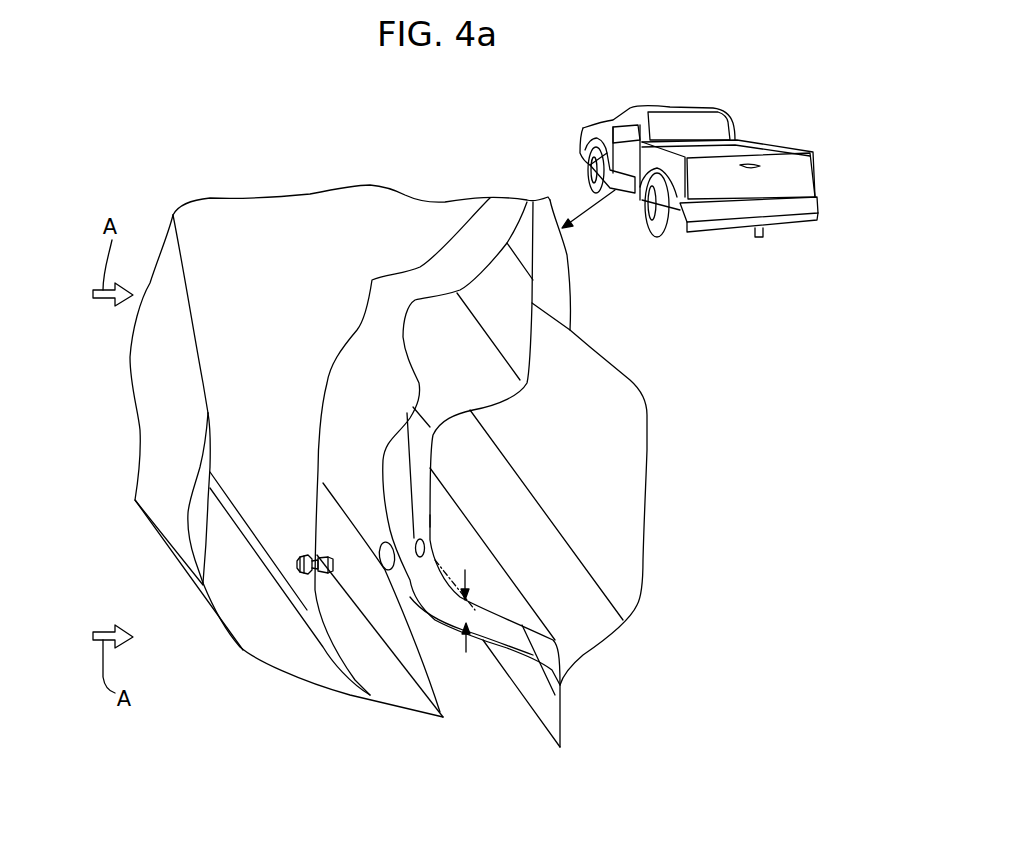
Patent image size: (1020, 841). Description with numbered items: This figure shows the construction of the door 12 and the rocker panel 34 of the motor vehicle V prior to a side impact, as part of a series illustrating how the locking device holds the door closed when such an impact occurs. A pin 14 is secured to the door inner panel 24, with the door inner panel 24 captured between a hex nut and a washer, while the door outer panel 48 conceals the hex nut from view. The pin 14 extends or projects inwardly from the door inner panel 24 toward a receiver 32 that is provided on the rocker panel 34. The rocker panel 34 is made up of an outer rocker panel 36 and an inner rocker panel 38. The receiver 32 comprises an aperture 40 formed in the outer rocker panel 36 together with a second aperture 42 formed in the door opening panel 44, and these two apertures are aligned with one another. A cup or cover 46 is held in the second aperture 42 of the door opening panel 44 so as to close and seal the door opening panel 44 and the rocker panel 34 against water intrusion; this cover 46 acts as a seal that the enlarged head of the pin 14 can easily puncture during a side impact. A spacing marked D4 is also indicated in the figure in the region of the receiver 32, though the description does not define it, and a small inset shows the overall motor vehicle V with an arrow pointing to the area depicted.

The door 12 is at (236, 657).
The pin 14 is at (324, 580).
The door inner panel 24 is at (290, 540).
The receiver 32 is at (373, 535).
The rocker panel 34 is at (662, 384).
The outer rocker panel 36 is at (430, 521).
The inner rocker panel 38 is at (640, 583).
The aperture 40 is at (423, 538).
The second aperture 42 is at (390, 572).
The door opening panel 44 is at (447, 623).
The cup or cover 46 is at (380, 566).
The door outer panel 48 is at (167, 513).
The motor vehicle V is at (702, 107).
The flange thickness dimension D4 is at (456, 621).